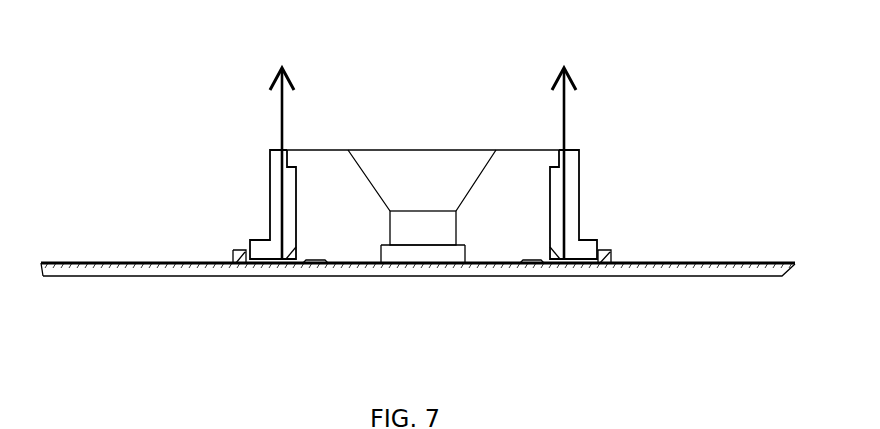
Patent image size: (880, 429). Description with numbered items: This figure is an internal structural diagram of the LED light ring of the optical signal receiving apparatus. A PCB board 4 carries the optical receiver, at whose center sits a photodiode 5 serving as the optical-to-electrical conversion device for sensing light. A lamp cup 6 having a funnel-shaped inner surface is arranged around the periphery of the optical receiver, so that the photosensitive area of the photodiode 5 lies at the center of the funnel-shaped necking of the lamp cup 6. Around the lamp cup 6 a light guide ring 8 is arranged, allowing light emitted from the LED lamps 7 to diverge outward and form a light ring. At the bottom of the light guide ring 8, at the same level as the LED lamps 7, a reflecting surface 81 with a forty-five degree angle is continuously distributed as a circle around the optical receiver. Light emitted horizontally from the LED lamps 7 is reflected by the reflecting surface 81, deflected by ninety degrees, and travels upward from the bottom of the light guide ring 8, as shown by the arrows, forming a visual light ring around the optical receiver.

The PCB board 4 is at (107, 273).
The photodiode 5 is at (422, 230).
The lamp cup 6 is at (532, 189).
The LED lamps 7 is at (608, 258).
The light guide ring 8 is at (271, 210).
The reflecting surface 81 is at (290, 253).